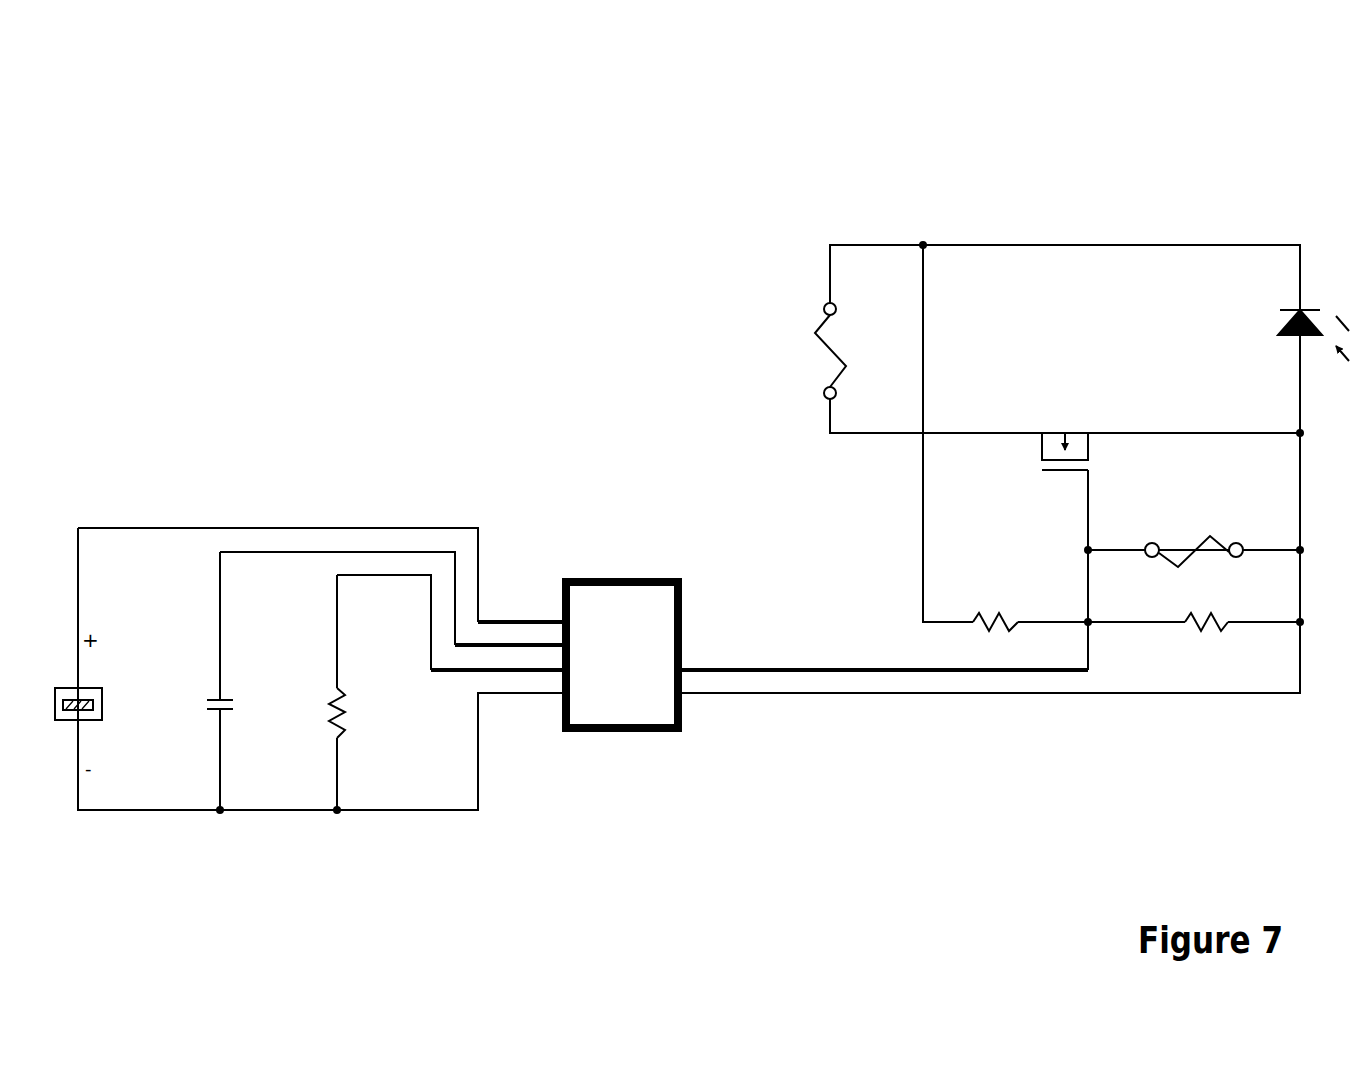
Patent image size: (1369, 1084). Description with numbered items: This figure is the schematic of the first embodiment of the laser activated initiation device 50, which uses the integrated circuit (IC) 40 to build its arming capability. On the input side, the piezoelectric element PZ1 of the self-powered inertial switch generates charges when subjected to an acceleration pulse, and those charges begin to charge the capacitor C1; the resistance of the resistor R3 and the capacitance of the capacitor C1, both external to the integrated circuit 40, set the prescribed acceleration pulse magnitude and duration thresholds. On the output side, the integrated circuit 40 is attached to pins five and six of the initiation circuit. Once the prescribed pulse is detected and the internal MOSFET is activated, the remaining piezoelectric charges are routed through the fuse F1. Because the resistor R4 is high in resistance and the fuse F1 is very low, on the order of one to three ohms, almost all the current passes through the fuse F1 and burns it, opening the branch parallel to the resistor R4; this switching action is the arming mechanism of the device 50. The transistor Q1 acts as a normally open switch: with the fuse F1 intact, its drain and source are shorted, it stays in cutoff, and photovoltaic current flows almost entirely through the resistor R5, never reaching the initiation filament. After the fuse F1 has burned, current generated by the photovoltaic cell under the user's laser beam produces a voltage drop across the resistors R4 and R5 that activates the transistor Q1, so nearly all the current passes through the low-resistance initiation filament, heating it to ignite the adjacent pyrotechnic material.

The integrated circuit (IC) 40 is at (613, 568).
The laser activated initiation device 50 is at (1014, 365).
The piezoelectric element PZ1 is at (107, 704).
The capacitor C1 is at (245, 707).
The resistor R3 is at (364, 713).
The transistor Q1 is at (1065, 426).
The resistor R5 is at (995, 598).
The resistor R4 is at (1206, 643).
The fuse F1 is at (1194, 528).